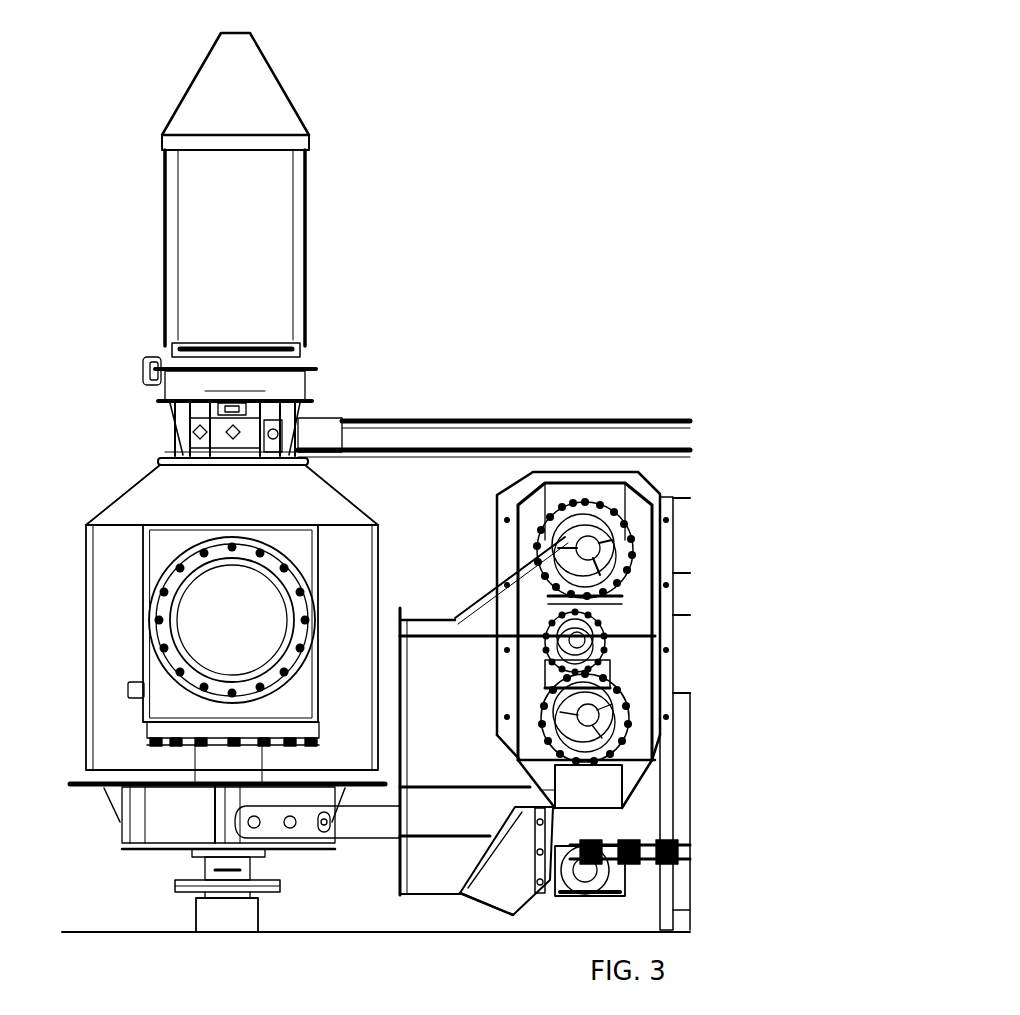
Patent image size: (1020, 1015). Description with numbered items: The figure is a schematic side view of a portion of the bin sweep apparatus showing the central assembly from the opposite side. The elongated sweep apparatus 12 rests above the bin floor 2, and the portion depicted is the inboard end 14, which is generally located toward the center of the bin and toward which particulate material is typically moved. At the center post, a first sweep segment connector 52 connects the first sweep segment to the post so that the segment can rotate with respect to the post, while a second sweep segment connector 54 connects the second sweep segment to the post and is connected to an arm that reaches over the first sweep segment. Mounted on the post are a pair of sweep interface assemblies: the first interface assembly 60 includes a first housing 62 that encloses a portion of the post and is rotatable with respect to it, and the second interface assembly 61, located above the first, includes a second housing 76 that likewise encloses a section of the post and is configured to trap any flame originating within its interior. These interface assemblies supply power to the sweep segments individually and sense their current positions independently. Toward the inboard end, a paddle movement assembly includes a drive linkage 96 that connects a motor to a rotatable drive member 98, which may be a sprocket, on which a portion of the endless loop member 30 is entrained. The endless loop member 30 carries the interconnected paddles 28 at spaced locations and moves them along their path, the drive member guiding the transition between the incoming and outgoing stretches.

The bin floor 2 is at (126, 930).
The sweep apparatus 12 is at (600, 98).
The inboard end 14 is at (415, 593).
The paddles 28 is at (497, 888).
The endless loop member 30 is at (665, 842).
The first sweep segment connector 52 is at (276, 830).
The second sweep segment connector 54 is at (318, 430).
The first interface assembly 60 is at (91, 790).
The second interface assembly 61 is at (315, 295).
The first housing 62 is at (142, 563).
The second housing 76 is at (292, 268).
The drive linkage 96 is at (579, 505).
The rotatable drive member 98 is at (633, 563).